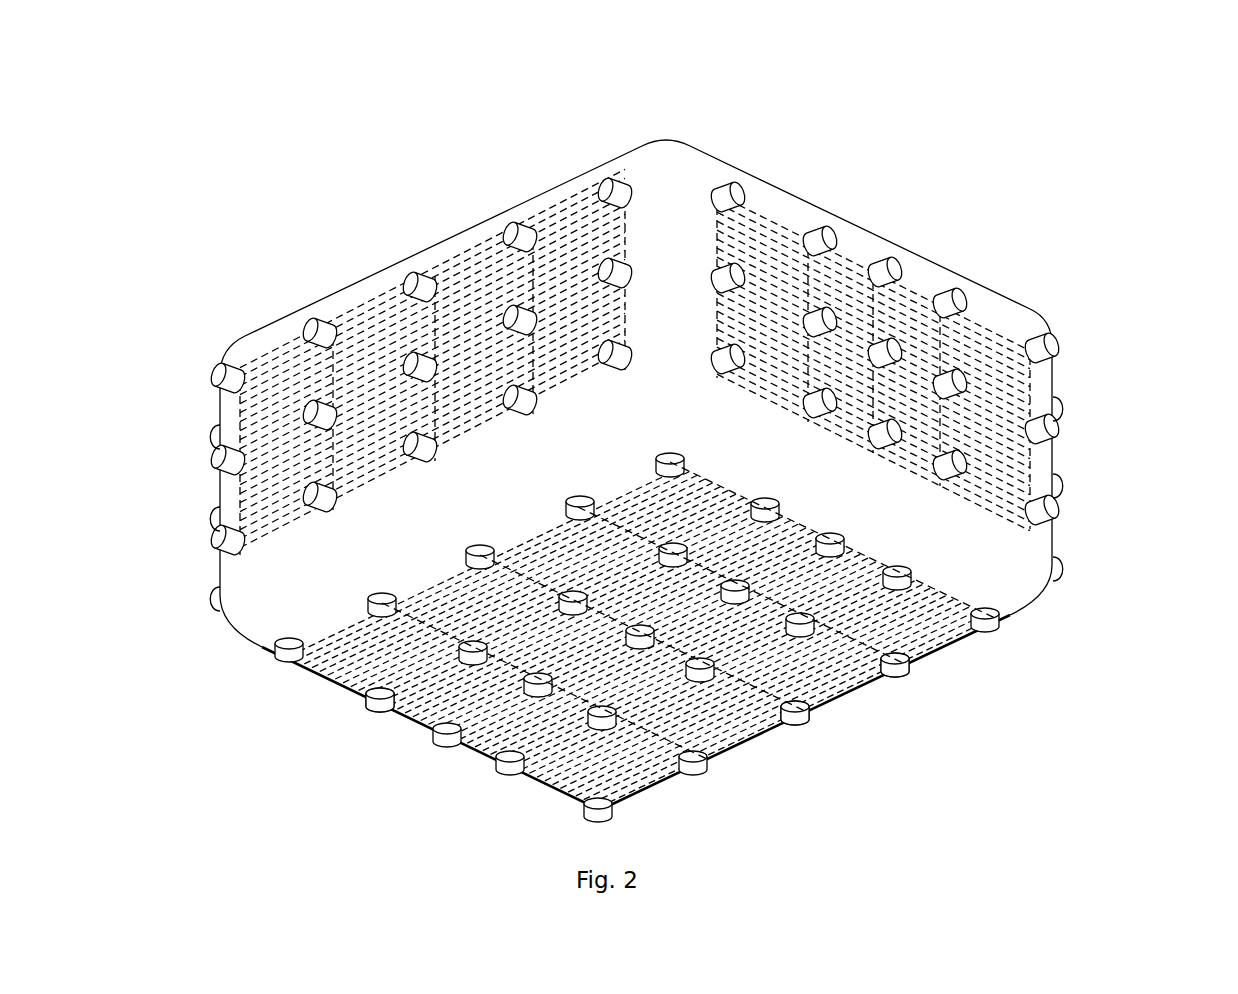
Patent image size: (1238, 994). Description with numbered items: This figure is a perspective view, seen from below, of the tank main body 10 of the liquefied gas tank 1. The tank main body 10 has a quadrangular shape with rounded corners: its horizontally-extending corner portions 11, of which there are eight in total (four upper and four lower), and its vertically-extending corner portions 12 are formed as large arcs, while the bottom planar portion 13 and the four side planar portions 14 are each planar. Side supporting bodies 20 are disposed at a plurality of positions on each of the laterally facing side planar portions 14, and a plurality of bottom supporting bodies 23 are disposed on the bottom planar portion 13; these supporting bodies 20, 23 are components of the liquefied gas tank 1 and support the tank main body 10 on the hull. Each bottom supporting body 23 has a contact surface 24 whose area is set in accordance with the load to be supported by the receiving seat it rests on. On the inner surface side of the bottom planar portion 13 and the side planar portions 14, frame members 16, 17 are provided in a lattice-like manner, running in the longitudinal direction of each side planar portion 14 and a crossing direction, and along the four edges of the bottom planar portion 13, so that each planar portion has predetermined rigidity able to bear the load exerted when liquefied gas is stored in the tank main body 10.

The liquefied gas tank 1 is at (315, 158).
The tank main body 10 is at (330, 296).
The horizontally-extending corner portions 11 is at (298, 577).
The vertically-extending corner portions 12 is at (667, 225).
The bottom planar portion 13 is at (615, 668).
The side planar portions 14 is at (635, 483).
The frame members 16 is at (355, 360).
The frame members 17 is at (440, 327).
The side supporting bodies 20 is at (297, 320).
The bottom supporting bodies 23 is at (440, 742).
The contact surface 24 is at (447, 742).